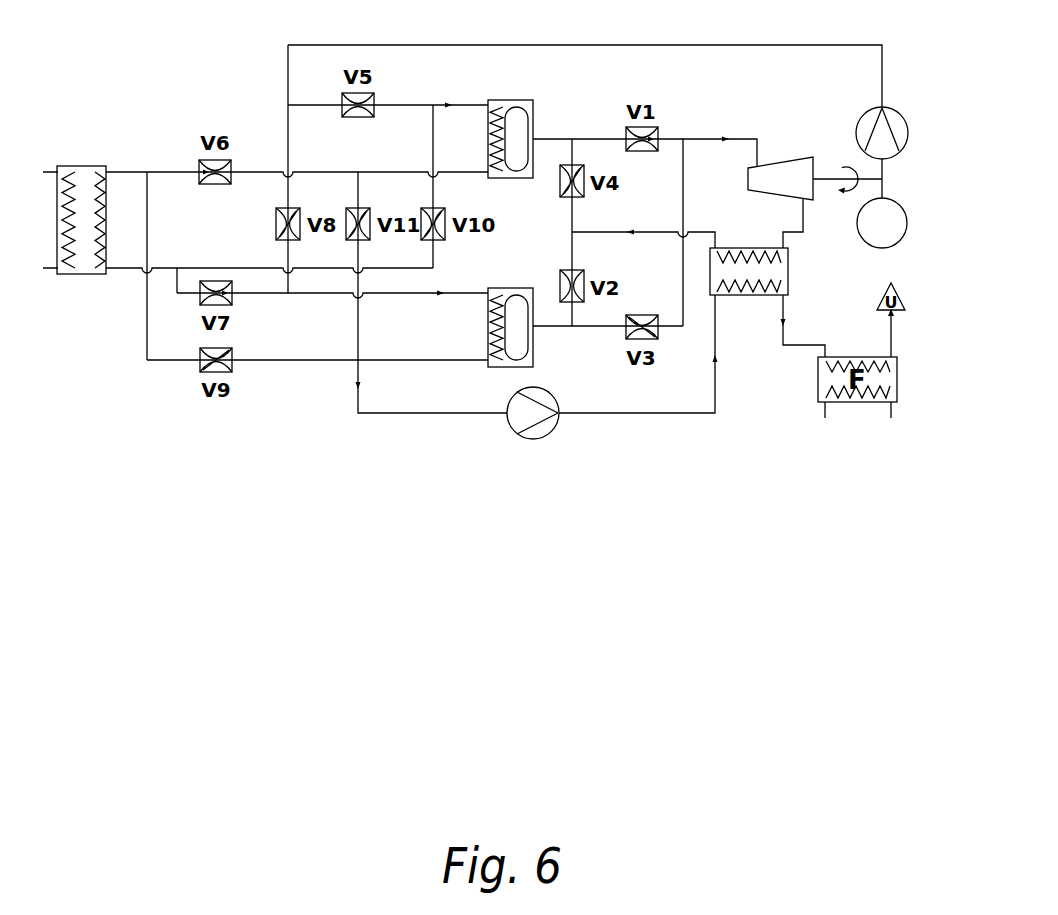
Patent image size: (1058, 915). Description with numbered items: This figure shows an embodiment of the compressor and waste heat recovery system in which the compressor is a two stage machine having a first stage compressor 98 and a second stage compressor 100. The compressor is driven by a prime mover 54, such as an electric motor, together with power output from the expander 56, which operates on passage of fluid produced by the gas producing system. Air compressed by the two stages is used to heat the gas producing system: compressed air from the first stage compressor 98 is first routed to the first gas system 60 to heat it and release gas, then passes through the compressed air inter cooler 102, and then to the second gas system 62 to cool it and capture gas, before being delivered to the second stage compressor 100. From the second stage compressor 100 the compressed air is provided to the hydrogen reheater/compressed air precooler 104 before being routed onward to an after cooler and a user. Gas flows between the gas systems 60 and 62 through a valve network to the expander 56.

The compressed air inter cooler 102 is at (82, 166).
The first gas system 60 is at (505, 100).
The second gas system 62 is at (505, 288).
The expander 56 is at (777, 163).
The first stage compressor 98 is at (901, 117).
The prime mover 54 is at (903, 203).
The hydrogen reheater/compressed air precooler 104 is at (790, 272).
The second stage compressor 100 is at (551, 434).